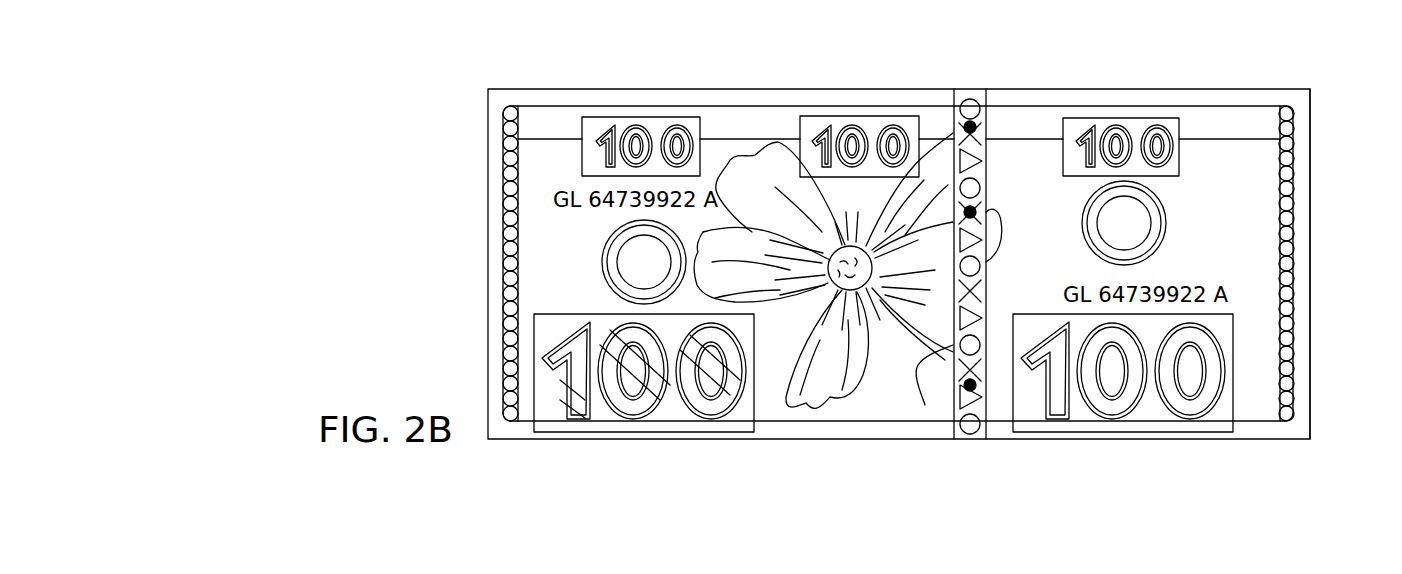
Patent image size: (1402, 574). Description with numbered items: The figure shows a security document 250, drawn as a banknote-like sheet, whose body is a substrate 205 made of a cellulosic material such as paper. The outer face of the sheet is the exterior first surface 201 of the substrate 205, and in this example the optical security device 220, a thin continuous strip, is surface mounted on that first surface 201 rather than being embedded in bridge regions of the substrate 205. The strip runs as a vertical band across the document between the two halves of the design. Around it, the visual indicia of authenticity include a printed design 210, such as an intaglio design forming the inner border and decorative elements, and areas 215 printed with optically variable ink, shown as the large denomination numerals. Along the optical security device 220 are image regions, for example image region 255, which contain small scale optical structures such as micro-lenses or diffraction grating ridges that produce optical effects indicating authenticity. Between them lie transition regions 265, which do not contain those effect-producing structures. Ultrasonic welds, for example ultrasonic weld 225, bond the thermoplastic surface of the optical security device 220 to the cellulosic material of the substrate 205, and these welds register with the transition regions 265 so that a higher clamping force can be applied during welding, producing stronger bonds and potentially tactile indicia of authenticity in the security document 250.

The first surface 201 is at (1243, 88).
The substrate 205 is at (1312, 262).
The printed design 210 is at (898, 269).
The areas printed with optically variable ink 215 is at (553, 348).
The optical security device 220 is at (988, 428).
The ultrasonic weld 225 is at (956, 100).
The security document 250 is at (452, 174).
The image region 255 is at (976, 97).
The transition regions 265 is at (992, 283).